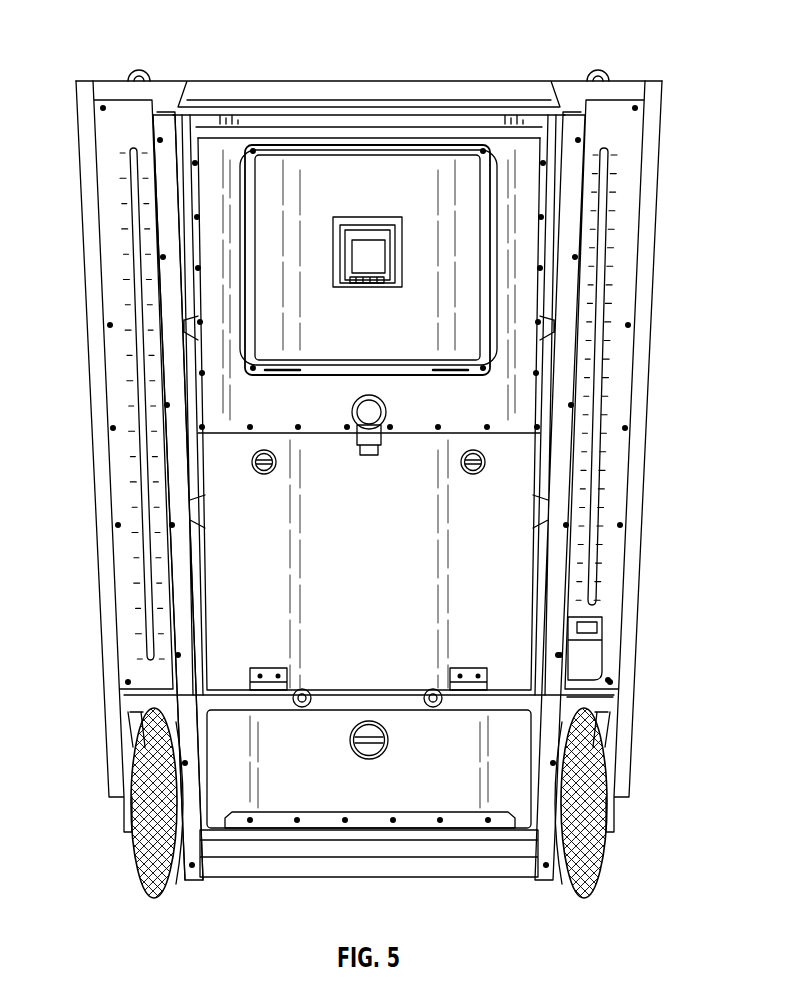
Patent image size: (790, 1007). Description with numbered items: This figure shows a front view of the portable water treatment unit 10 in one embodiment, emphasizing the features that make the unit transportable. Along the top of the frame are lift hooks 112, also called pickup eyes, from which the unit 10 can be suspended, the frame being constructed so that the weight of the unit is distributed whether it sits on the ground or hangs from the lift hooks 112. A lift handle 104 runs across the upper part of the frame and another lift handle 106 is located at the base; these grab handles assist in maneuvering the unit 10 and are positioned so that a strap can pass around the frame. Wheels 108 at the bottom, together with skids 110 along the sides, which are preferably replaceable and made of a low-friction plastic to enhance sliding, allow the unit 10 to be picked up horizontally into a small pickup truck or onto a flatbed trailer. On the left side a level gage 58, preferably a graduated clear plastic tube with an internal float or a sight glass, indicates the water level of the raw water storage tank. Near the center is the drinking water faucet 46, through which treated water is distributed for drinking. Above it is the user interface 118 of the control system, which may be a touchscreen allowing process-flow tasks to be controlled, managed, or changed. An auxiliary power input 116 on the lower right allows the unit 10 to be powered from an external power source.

The treatment unit 10 is at (379, 563).
The drinking water faucet 46 is at (378, 447).
The level gage 58 is at (138, 616).
The lift handle 104 is at (437, 112).
The lift handle 106 is at (265, 872).
The wheel 108 is at (150, 892).
The skid 110 is at (172, 552).
The lift hook 112 is at (141, 68).
The auxiliary power input 116 is at (583, 657).
The user interface 118 is at (342, 175).